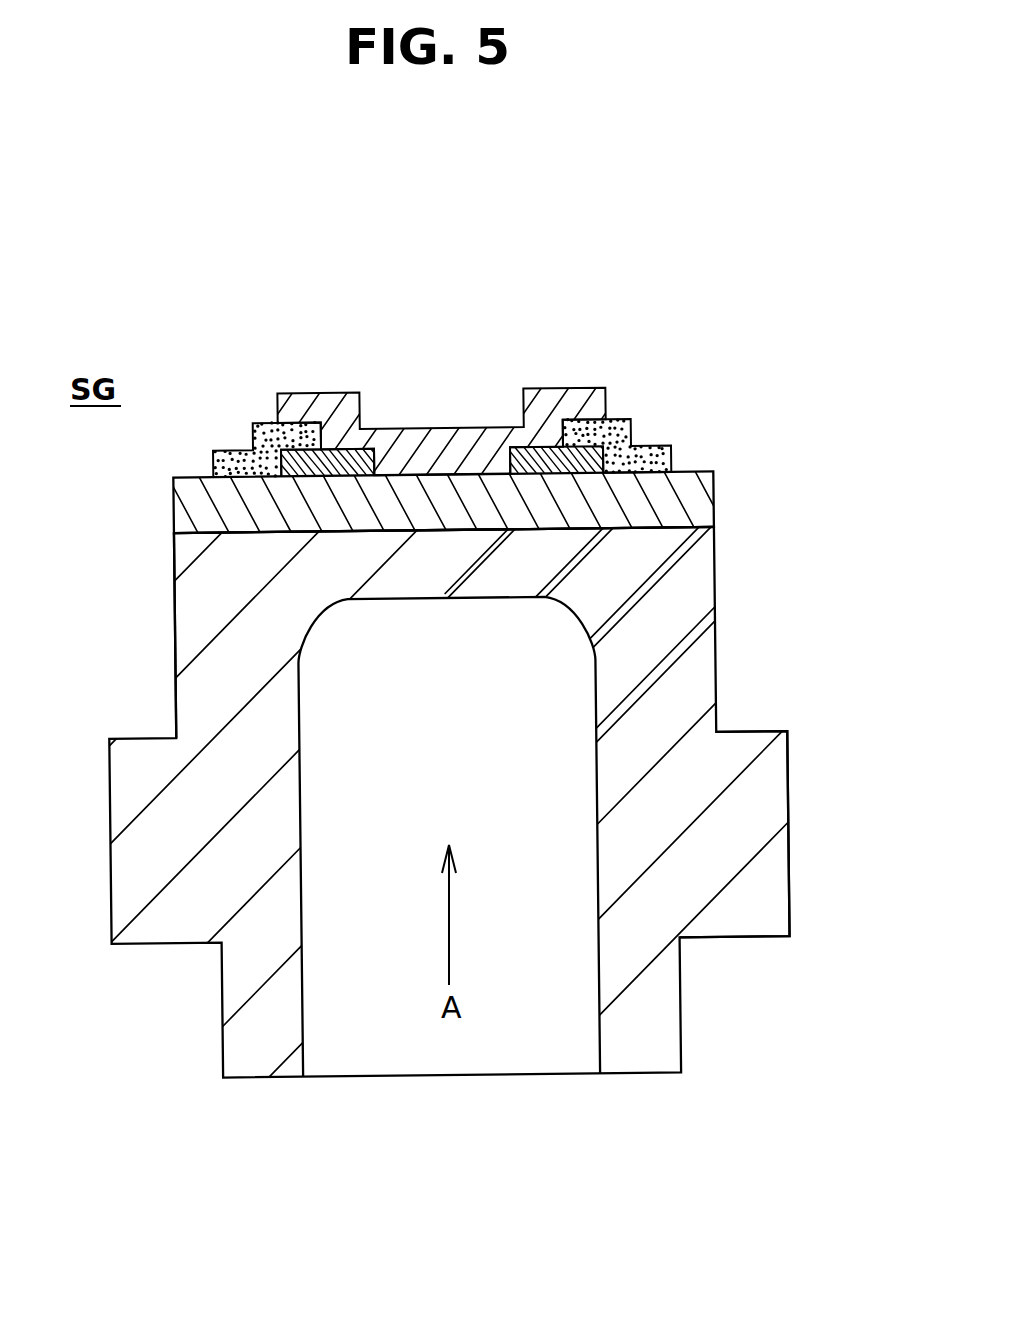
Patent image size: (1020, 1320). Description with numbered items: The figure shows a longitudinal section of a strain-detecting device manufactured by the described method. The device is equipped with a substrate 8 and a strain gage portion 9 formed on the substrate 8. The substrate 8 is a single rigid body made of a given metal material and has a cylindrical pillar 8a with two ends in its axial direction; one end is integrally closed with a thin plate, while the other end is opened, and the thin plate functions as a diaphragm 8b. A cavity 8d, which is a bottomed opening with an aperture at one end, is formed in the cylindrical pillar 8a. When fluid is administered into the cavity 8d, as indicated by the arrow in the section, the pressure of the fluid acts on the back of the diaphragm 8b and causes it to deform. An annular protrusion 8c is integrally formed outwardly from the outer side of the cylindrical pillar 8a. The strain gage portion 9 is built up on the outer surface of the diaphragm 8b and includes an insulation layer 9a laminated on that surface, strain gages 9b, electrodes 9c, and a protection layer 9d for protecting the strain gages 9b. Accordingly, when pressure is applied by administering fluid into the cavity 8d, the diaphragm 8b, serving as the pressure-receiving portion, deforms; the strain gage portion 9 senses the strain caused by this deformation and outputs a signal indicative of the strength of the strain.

The substrate 8 is at (715, 605).
The cylindrical pillar 8a is at (176, 648).
The diaphragm 8b is at (449, 545).
The annular protrusion 8c is at (790, 817).
The cavity 8d is at (302, 1000).
The strain gage portion 9 is at (519, 396).
The insulation layer 9a is at (708, 496).
The strain gages 9b is at (637, 455).
The electrodes 9c is at (632, 422).
The protection layer 9d is at (603, 405).